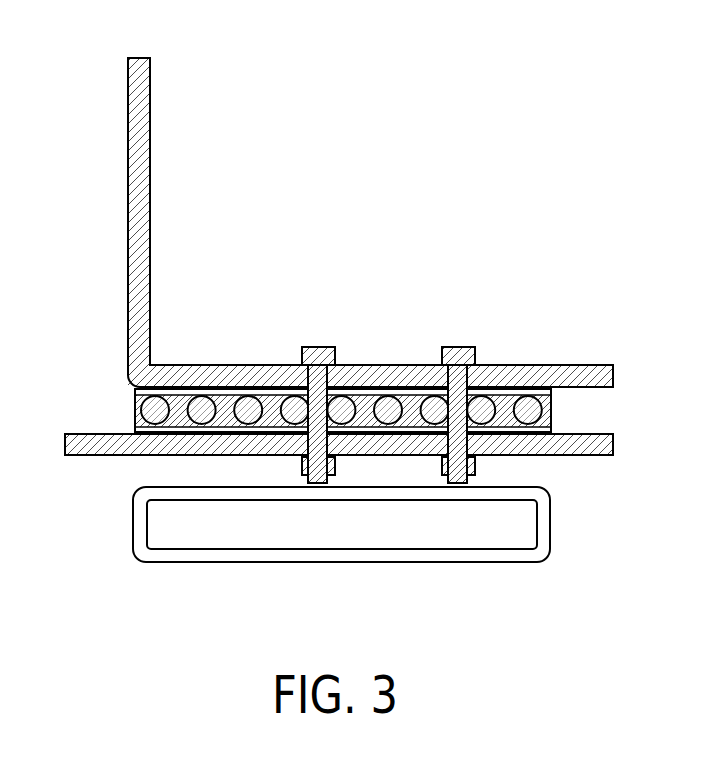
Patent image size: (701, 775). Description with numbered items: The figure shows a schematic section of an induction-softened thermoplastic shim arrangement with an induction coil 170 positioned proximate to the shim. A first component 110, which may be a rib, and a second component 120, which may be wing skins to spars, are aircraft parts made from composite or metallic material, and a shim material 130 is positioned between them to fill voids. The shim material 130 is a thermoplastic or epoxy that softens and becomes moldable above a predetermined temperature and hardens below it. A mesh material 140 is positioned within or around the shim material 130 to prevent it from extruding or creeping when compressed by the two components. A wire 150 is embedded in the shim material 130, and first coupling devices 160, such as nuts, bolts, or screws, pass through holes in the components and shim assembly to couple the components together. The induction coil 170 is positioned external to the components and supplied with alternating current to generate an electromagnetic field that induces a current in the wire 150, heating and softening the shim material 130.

The first component 110 is at (128, 98).
The second component 120 is at (108, 456).
The shim material 130 is at (130, 412).
The mesh material 140 is at (132, 392).
The wire 150 is at (248, 403).
The first coupling devices 160 is at (318, 347).
The induction coil 170 is at (208, 562).